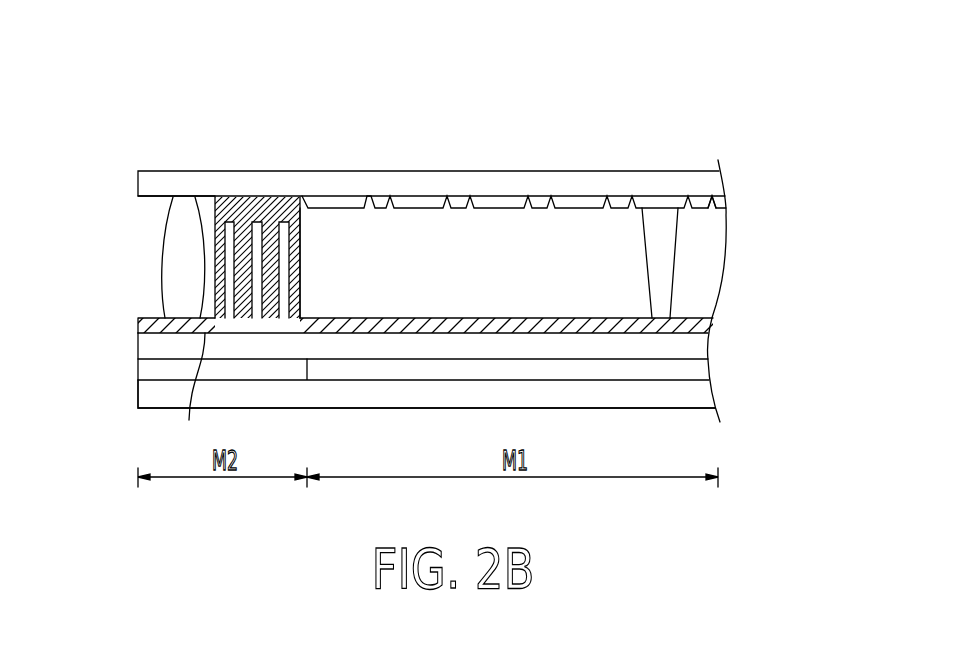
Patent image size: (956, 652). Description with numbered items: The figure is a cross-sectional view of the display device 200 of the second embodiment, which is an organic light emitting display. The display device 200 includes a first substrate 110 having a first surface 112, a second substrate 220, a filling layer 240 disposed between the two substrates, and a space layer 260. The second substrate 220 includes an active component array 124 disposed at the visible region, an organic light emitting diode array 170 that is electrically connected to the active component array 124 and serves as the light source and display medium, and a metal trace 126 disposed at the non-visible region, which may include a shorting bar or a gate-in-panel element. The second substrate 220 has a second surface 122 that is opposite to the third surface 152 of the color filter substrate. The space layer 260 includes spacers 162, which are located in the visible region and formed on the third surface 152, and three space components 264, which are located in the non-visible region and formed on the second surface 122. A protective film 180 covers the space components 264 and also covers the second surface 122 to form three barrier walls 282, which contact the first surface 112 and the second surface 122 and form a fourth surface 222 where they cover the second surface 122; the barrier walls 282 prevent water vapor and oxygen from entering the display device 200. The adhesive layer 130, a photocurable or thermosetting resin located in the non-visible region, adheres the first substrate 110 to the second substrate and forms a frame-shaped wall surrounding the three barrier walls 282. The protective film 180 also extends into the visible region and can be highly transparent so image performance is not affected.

The display device 200 is at (137, 45).
The first substrate 110 is at (148, 183).
The first surface 112 is at (155, 212).
The adhesive layer 130 is at (176, 240).
The space layer 260 is at (390, 193).
The space component 264 is at (284, 215).
The spacer 162 is at (660, 223).
The barrier wall 282 is at (305, 220).
The filling layer 240 is at (584, 240).
The third surface 152 is at (708, 214).
The second surface 122 is at (676, 322).
The fourth surface 222 is at (155, 318).
The active component array 124 is at (426, 378).
The organic light emitting diode array 170 is at (150, 348).
The metal trace 126 is at (150, 371).
The second substrate 220 is at (157, 396).
The protective film 180 is at (188, 392).